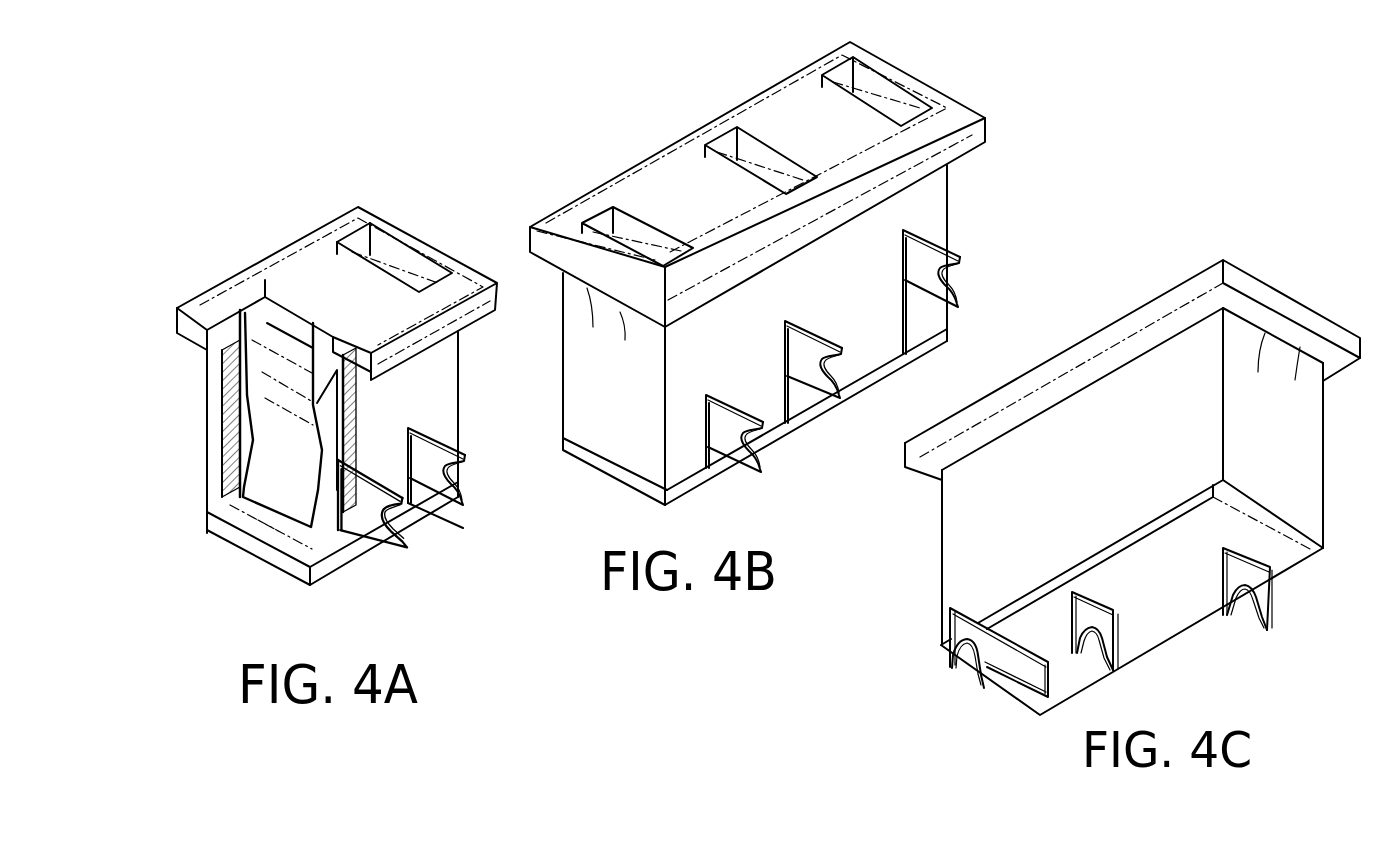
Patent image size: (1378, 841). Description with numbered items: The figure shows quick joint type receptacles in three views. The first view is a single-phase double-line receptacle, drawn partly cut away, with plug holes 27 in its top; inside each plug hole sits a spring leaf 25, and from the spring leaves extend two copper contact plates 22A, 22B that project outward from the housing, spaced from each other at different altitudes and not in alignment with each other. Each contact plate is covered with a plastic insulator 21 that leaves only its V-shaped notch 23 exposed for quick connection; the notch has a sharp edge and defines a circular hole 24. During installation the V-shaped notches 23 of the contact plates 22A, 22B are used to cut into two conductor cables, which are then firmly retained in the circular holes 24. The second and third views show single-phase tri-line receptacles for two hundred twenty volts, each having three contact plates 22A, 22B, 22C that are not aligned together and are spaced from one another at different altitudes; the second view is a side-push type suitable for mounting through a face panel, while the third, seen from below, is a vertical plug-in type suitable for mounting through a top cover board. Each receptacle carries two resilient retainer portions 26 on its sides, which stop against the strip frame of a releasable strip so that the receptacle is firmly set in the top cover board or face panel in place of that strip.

In FIG. 4A, the plastic insulator 21 is at (369, 474).
In FIG. 4B, the plastic insulator 21 is at (743, 410).
In FIG. 4A, the contact plate 22A is at (370, 517).
In FIG. 4B, the contact plate 22A is at (714, 425).
In FIG. 4C, the contact plate 22A is at (970, 635).
In FIG. 4A, the contact plate 22B is at (432, 455).
In FIG. 4B, the contact plate 22B is at (797, 348).
In FIG. 4C, the contact plate 22B is at (1098, 615).
In FIG. 4B, the contact plate 22C is at (913, 262).
In FIG. 4C, the contact plate 22C is at (1258, 580).
In FIG. 4A, the V-shaped notch 23 is at (409, 546).
In FIG. 4B, the V-shaped notch 23 is at (763, 470).
In FIG. 4A, the circular hole 24 is at (402, 526).
In FIG. 4B, the circular hole 24 is at (806, 417).
In FIG. 4A, the spring leaf 25 is at (273, 488).
In FIG. 4B, the resilient retainer portion 26 is at (585, 333).
In FIG. 4C, the resilient retainer portion 26 is at (1283, 355).
In FIG. 4A, the plug hole 27 is at (403, 272).
In FIG. 4B, the plug hole 27 is at (737, 147).